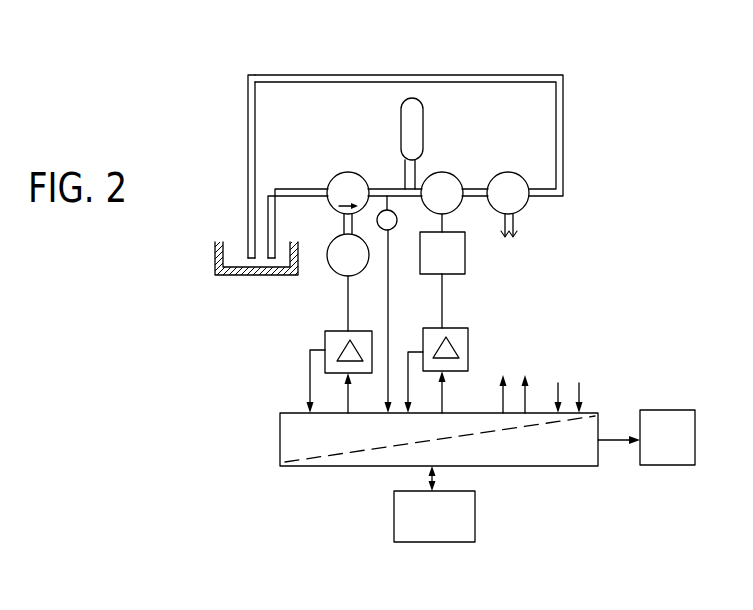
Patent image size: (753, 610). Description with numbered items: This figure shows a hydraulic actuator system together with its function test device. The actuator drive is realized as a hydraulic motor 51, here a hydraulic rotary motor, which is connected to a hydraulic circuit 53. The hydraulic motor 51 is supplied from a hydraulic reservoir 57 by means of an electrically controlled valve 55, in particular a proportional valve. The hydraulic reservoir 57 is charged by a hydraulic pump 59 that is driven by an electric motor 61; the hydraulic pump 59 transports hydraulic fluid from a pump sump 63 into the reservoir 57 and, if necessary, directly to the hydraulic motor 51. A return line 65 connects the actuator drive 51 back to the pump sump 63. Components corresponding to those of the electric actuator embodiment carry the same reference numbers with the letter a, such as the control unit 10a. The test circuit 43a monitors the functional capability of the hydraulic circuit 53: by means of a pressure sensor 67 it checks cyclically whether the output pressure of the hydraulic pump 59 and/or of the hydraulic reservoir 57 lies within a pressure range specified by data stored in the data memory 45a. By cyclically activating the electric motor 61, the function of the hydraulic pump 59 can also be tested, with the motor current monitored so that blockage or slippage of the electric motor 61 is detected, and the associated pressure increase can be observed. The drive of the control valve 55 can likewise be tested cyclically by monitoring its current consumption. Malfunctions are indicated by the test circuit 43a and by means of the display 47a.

The hydraulic circuit 53 is at (468, 108).
The return line 65 is at (248, 128).
The pump sump 63 is at (255, 276).
The hydraulic pump 59 is at (338, 176).
The electric motor 61 is at (340, 277).
The hydraulic reservoir 57 is at (404, 131).
The electrically controlled valve 55 is at (452, 175).
The hydraulic motor 51 is at (495, 174).
The pressure sensor 67 is at (394, 227).
The control unit 10a is at (270, 435).
The test circuit 43a is at (553, 448).
The data memory 45a is at (402, 509).
The display 47a is at (660, 410).